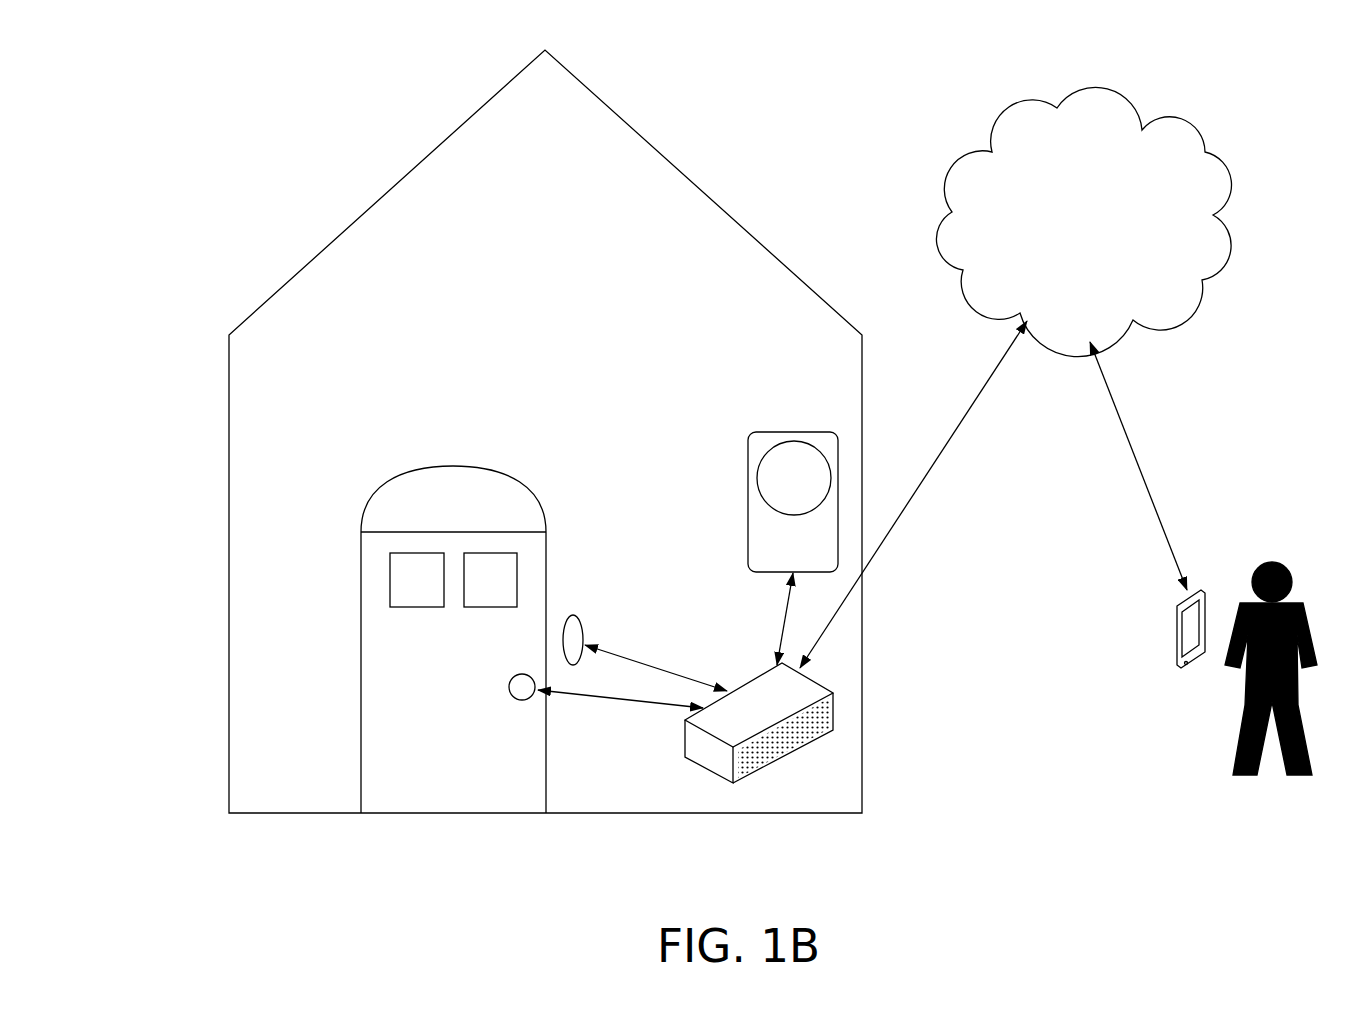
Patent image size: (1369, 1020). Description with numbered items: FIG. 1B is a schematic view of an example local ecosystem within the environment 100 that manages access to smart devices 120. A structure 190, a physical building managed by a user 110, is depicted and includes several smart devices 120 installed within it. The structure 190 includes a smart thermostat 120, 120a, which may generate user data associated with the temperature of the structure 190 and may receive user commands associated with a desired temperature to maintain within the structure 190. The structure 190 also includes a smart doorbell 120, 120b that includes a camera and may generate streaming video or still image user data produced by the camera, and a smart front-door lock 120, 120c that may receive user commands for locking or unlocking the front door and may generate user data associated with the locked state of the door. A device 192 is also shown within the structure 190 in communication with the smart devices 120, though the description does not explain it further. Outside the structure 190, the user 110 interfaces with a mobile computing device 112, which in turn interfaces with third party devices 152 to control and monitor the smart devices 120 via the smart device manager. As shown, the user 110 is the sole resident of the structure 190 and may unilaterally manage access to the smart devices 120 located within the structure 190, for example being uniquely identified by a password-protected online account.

The environment 100 is at (203, 80).
The user 110 is at (1282, 560).
The mobile computing device 112 is at (1178, 668).
The smart devices 120 is at (635, 566).
The smart thermostat 120a is at (768, 432).
The smart doorbell 120b is at (578, 618).
The smart front-door lock 120c is at (518, 700).
The third party devices 152 is at (1083, 221).
The structure 190 is at (545, 431).
The hub device 192 is at (700, 763).